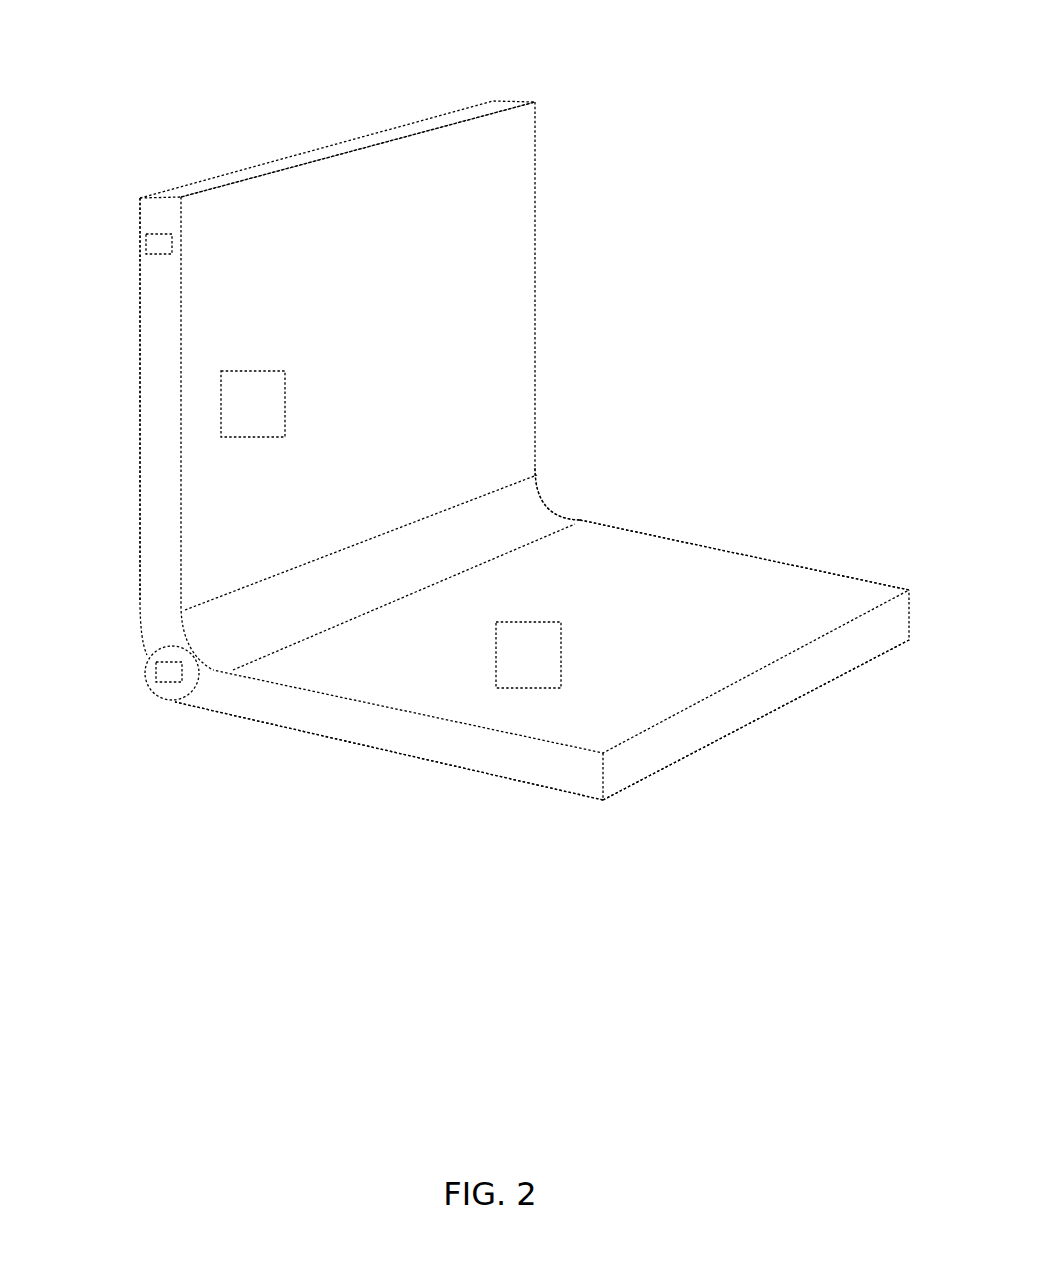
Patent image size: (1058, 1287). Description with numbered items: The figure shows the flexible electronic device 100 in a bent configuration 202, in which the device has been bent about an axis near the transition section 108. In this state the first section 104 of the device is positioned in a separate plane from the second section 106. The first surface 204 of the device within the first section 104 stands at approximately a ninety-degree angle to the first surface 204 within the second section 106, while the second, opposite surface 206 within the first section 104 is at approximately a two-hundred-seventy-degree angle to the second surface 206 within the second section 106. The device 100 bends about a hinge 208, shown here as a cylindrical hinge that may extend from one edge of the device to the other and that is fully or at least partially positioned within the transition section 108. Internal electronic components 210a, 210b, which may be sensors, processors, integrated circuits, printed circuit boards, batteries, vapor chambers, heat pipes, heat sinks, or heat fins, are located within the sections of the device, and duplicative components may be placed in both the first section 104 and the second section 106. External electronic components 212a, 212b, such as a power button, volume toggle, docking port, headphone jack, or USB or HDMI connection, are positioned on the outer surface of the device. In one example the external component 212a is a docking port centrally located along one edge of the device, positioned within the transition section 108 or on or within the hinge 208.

The flexible electronic device 100 is at (410, 128).
The first section 104 is at (543, 246).
The second section 106 is at (837, 557).
The transition section 108 is at (558, 496).
The bent configuration 202 is at (676, 810).
The first surface 204 is at (512, 348).
The second surface 206 is at (140, 445).
The hinge 208 is at (172, 688).
The internal electronic component 210a is at (253, 404).
The internal electronic component 210b is at (528, 655).
The external electronic component 212a is at (155, 672).
The external electronic component 212b is at (140, 245).